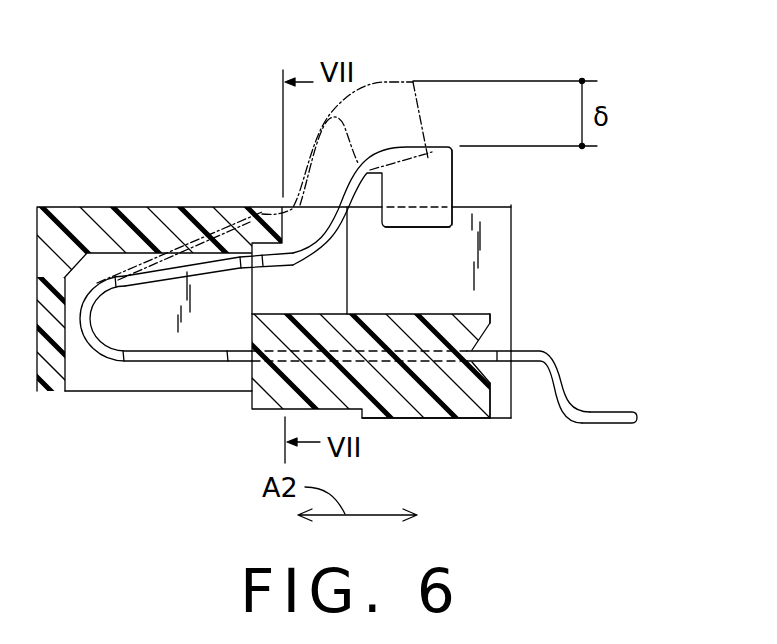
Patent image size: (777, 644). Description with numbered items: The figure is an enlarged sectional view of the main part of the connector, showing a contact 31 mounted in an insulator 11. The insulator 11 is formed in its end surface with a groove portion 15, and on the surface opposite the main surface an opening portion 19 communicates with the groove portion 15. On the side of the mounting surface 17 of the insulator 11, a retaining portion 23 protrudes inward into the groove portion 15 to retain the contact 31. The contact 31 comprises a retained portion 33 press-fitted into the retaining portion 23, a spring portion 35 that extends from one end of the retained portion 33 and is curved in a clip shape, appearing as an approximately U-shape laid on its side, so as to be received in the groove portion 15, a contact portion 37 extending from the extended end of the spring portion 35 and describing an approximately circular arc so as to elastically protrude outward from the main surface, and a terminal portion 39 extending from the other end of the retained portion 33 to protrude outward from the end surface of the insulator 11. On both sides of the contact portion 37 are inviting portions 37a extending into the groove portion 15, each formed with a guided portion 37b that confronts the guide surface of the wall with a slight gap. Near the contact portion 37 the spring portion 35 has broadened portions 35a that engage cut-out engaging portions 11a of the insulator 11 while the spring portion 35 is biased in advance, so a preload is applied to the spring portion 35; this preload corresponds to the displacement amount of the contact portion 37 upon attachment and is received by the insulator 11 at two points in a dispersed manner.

The insulator 11 is at (132, 203).
The engaging portion 11a is at (340, 256).
The groove portion 15 is at (490, 279).
The mounting surface 17 is at (475, 420).
The opening portion 19 is at (92, 382).
The retaining portion 23 is at (448, 418).
The contact 31 is at (556, 342).
The retained portion 33 is at (273, 393).
The spring portion 35 is at (170, 367).
The broadened portion 35a is at (260, 220).
The contact portion 37 is at (385, 80).
The inviting portion 37a is at (453, 175).
The guided portion 37b is at (432, 222).
The terminal portion 39 is at (590, 410).